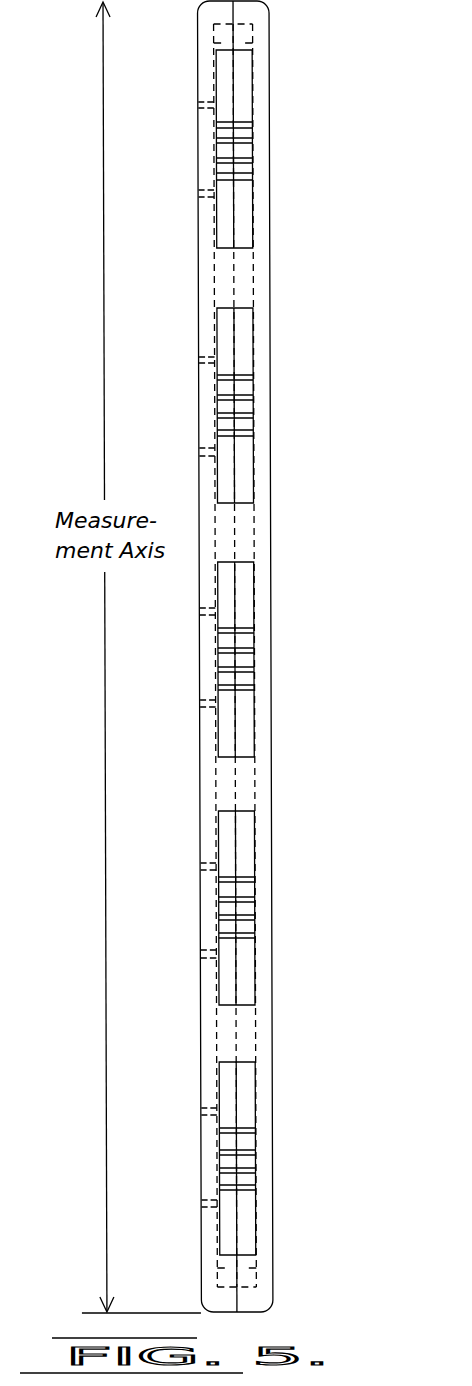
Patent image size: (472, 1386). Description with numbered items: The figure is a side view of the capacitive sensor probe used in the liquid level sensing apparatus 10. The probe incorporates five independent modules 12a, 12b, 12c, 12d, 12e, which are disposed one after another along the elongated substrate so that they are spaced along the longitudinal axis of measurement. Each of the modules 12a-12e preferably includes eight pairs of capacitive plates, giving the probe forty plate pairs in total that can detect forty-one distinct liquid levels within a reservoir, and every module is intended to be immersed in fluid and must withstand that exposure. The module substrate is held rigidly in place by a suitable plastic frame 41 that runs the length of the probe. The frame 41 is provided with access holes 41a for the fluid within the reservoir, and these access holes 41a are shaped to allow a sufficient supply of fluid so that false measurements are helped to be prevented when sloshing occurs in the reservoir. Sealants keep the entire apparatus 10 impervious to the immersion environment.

The liquid level sensing apparatus 10 is at (338, 77).
The module 12a is at (194, 168).
The module 12b is at (194, 422).
The module 12c is at (194, 678).
The module 12d is at (196, 917).
The module 12e is at (198, 1178).
The plastic frame 41 is at (198, 276).
The access holes 41a is at (251, 189).